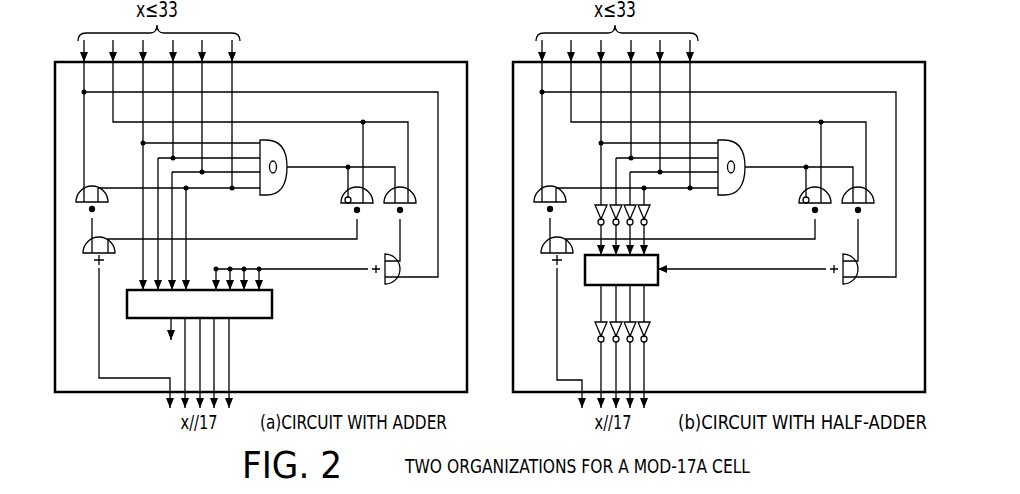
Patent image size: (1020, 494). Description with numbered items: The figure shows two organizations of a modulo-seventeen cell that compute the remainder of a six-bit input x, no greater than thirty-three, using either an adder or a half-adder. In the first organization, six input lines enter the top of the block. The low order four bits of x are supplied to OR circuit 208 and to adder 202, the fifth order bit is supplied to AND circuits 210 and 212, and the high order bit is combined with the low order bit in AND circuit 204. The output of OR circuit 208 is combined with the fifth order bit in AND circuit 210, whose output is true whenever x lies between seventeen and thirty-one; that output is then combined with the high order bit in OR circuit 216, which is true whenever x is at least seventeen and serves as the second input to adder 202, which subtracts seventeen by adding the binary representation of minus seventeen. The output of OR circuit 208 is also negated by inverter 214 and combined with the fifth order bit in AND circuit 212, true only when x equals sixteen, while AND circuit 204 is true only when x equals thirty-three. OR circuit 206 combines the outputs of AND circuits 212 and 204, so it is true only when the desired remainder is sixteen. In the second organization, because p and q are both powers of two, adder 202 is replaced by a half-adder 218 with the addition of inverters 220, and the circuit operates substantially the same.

The adder 202 is at (272, 312).
The AND circuit 204 is at (100, 216).
The OR circuit 206 is at (90, 268).
The OR circuit 208 is at (284, 152).
The AND circuit 210 is at (408, 218).
The AND circuit 212 is at (343, 215).
The inverter 214 is at (346, 198).
The OR circuit 216 is at (368, 284).
The half-adder 218 is at (642, 286).
The inverters 220 is at (627, 271).